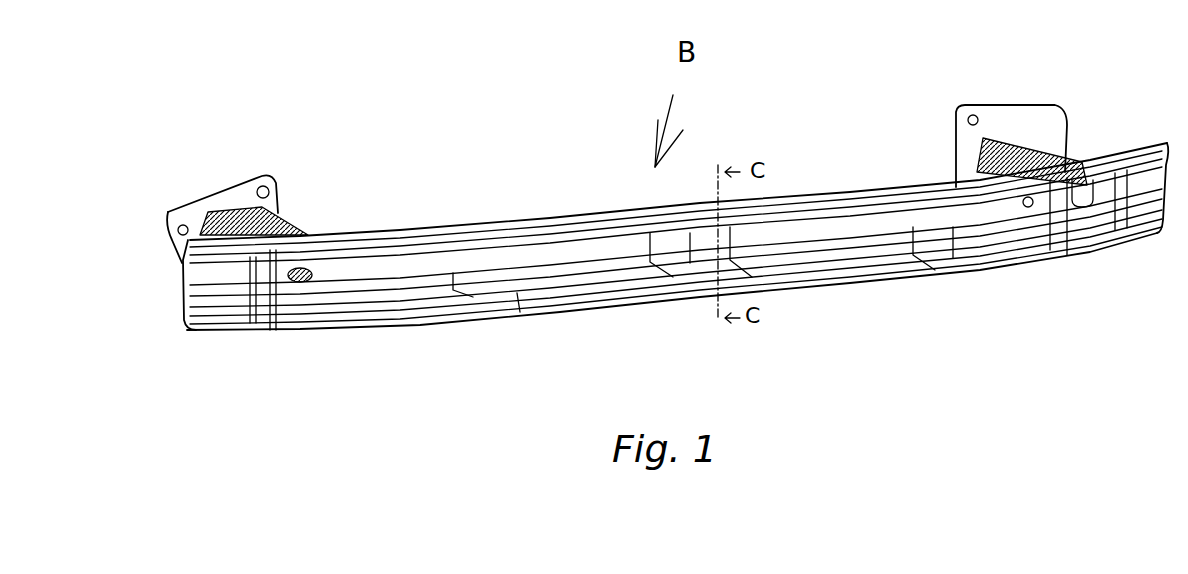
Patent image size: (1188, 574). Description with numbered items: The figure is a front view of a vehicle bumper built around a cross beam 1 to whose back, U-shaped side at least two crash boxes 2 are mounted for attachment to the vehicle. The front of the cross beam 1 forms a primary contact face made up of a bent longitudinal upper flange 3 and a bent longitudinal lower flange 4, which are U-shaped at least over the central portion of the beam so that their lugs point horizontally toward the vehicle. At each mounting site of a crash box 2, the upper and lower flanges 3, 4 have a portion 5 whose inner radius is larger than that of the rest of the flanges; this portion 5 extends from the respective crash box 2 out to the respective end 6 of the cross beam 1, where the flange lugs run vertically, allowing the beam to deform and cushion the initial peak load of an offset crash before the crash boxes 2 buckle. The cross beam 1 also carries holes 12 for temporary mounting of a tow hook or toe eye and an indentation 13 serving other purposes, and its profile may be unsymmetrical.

The cross beam 1 is at (878, 295).
The crash box 2 is at (260, 210).
The bent longitudinal upper flange 3 is at (543, 230).
The bent longitudinal lower flange 4 is at (563, 293).
The portion with larger inner radius 5 is at (305, 255).
The end of the cross beam 6 is at (183, 285).
The hole 12 is at (287, 297).
The indentation 13 is at (353, 250).